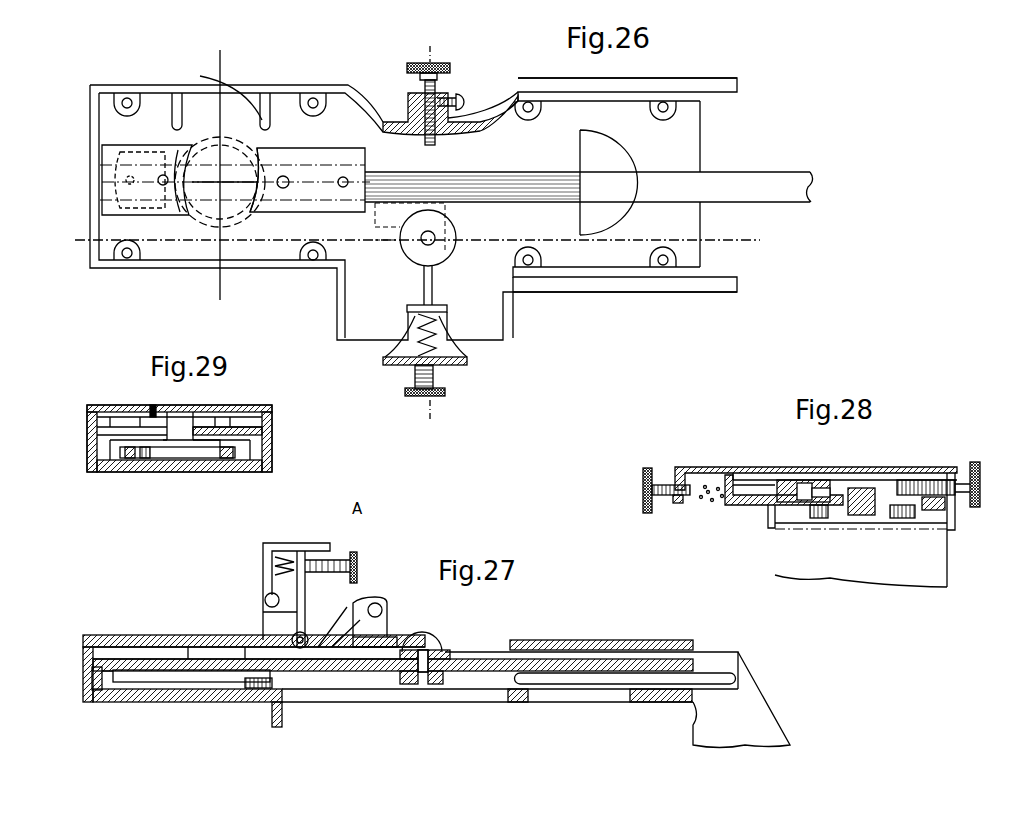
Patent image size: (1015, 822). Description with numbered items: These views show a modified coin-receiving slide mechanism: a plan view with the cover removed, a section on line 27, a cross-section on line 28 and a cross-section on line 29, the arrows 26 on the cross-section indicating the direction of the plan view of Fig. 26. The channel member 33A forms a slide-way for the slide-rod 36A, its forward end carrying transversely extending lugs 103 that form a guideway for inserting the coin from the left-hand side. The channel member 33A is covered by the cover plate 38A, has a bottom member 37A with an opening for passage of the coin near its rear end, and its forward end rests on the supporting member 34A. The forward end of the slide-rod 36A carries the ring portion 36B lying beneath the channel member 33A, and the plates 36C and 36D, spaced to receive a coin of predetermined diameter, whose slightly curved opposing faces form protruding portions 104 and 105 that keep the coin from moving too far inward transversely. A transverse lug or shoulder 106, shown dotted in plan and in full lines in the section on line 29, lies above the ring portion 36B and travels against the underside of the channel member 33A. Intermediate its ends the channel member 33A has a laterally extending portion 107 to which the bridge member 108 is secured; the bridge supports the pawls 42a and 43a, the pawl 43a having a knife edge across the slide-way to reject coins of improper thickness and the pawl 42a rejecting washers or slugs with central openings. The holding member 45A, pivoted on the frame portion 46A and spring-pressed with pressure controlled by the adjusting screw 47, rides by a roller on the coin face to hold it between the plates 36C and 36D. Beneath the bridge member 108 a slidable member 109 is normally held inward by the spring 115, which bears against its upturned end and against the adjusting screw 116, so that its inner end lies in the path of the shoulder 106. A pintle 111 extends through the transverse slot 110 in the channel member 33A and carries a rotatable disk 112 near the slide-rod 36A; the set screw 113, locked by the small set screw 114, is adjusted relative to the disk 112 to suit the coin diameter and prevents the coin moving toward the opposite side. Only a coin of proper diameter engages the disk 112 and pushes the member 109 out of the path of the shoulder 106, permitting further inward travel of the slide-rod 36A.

In FIG. 28, the section line 26 is at (668, 465).
In FIG. 26, the section line 27— 27 is at (78, 247).
In FIG. 27, the section line 27— 27 is at (601, 634).
In FIG. 26, the section line 28— 28 is at (437, 55).
In FIG. 26, the section line 29— 29 is at (227, 73).
In FIG. 26, the channel member 33A is at (683, 129).
In FIG. 28, the channel member 33A is at (843, 487).
In FIG. 27, the supporting member 34A is at (200, 692).
In FIG. 26, the slide-rod 36A is at (589, 173).
In FIG. 29, the slide-rod 36A is at (233, 400).
In FIG. 28, the slide-rod 36A is at (858, 513).
In FIG. 27, the slide-rod 36A is at (730, 669).
In FIG. 26, the ring portion 36B is at (205, 232).
In FIG. 29, the ring portion 36B is at (157, 455).
In FIG. 28, the ring portion 36B is at (882, 515).
In FIG. 27, the ring portion 36B is at (183, 684).
In FIG. 26, the plate 36C is at (314, 146).
In FIG. 26, the plate 36D is at (110, 158).
In FIG. 27, the bottom member 37A is at (656, 703).
In FIG. 27, the cover plate 38A is at (110, 633).
In FIG. 27, the pawl 42a is at (355, 615).
In FIG. 27, the pawl 43a is at (349, 612).
In FIG. 27, the holding member 45A is at (288, 592).
In FIG. 27, the frame portion 46A is at (268, 543).
In FIG. 27, the adjusting screw 47 is at (354, 552).
In FIG. 26, the lugs 103 is at (177, 102).
In FIG. 26, the protruding portion 104 is at (253, 212).
In FIG. 26, the protruding portion 105 is at (186, 214).
In FIG. 26, the lug or shoulder 106 is at (105, 202).
In FIG. 29, the lug or shoulder 106 is at (262, 423).
In FIG. 28, the lug or shoulder 106 is at (880, 497).
In FIG. 27, the lug or shoulder 106 is at (133, 670).
In FIG. 26, the laterally extending portion 107 is at (480, 316).
In FIG. 26, the bridge member 108 is at (447, 368).
In FIG. 28, the bridge member 108 is at (717, 467).
In FIG. 26, the slidable member 109 is at (445, 330).
In FIG. 28, the slidable member 109 is at (726, 505).
In FIG. 27, the slidable member 109 is at (437, 684).
In FIG. 26, the transverse slot 110 is at (430, 270).
In FIG. 28, the pintle 111 is at (772, 480).
In FIG. 27, the pintle 111 is at (400, 692).
In FIG. 26, the roller or disk 112 is at (452, 252).
In FIG. 28, the roller or disk 112 is at (823, 480).
In FIG. 27, the roller or disk 112 is at (447, 650).
In FIG. 26, the set screw 113 is at (443, 92).
In FIG. 28, the set screw 113 is at (955, 473).
In FIG. 27, the set screw 113 is at (422, 637).
In FIG. 26, the set screw 114 is at (466, 100).
In FIG. 26, the spring 115 is at (416, 385).
In FIG. 28, the spring 115 is at (698, 500).
In FIG. 26, the adjusting member or screw 116 is at (445, 393).
In FIG. 28, the adjusting member or screw 116 is at (640, 490).